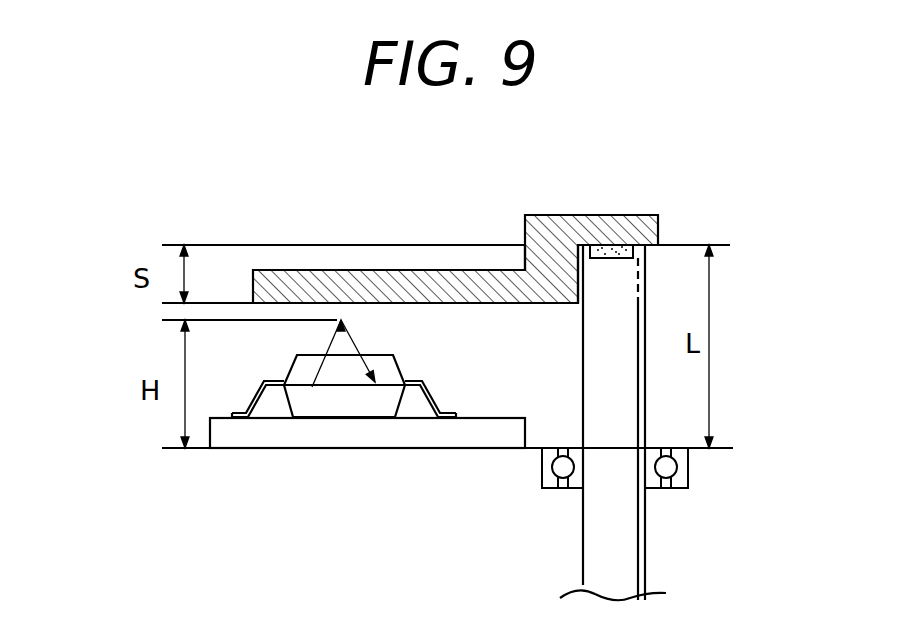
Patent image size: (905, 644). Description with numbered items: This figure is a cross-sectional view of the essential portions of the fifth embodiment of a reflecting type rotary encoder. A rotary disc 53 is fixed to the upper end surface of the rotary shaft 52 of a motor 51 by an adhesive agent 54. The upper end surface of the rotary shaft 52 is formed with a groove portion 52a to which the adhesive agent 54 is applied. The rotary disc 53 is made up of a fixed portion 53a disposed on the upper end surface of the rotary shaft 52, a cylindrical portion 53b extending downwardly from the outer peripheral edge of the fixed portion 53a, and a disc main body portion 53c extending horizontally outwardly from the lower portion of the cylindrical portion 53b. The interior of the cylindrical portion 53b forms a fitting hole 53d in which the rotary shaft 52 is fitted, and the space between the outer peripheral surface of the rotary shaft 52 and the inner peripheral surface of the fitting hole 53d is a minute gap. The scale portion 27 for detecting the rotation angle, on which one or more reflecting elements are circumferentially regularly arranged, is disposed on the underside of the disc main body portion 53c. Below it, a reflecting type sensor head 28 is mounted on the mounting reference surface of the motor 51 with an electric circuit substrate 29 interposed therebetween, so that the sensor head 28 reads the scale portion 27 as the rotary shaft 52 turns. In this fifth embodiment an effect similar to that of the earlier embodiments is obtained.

The scale portion for detecting the rotation angle 27 is at (340, 303).
The reflecting type sensor head 28 is at (292, 368).
The electric circuit substrate 29 is at (340, 440).
The motor 51 is at (583, 548).
The rotary shaft 52 is at (630, 410).
The groove portion 52a is at (648, 256).
The rotary disc 53 is at (280, 268).
The fixed portion 53a is at (549, 215).
The cylindrical portion 53b is at (522, 252).
The disc main body portion 53c is at (377, 282).
The fitting hole 53d is at (583, 275).
The adhesive agent 54 is at (612, 250).